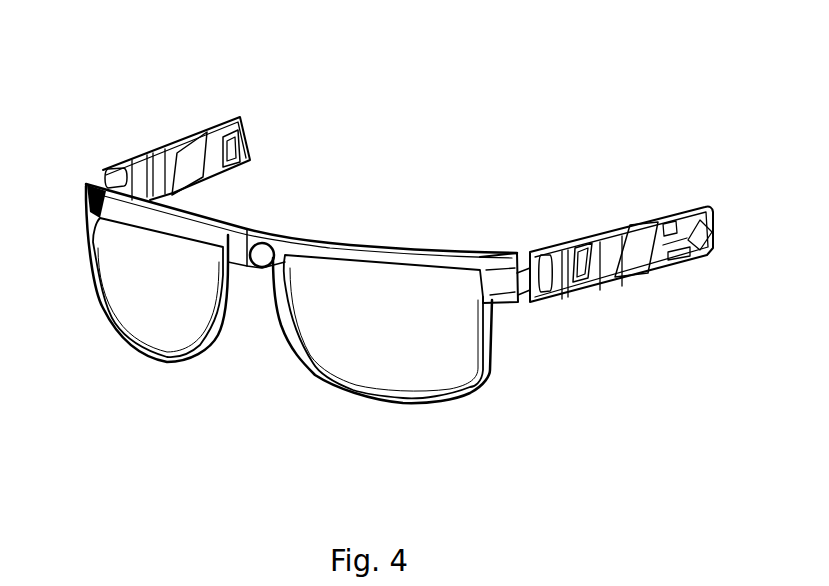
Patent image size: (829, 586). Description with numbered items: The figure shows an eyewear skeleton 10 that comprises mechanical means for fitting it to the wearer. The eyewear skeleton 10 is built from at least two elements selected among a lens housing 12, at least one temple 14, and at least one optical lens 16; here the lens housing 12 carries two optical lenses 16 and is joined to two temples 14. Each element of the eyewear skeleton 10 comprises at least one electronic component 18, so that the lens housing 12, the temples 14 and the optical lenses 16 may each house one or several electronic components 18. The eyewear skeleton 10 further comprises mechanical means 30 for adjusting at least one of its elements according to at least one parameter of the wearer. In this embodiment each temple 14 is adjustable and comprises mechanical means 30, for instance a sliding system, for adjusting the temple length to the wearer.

The eyewear skeleton 10 is at (498, 59).
The lens housing 12 is at (308, 285).
The temple 14 is at (415, 185).
The optical lens 16 is at (303, 346).
The electronic component 18 is at (444, 225).
The mechanical means 30 is at (433, 211).